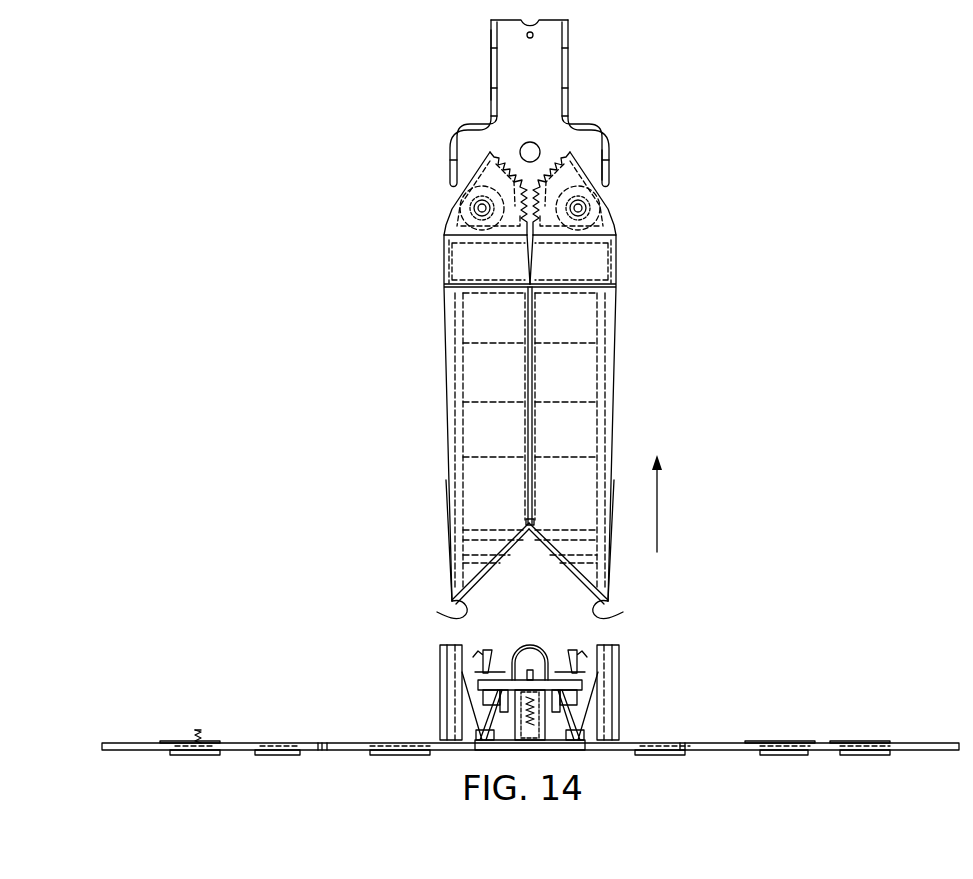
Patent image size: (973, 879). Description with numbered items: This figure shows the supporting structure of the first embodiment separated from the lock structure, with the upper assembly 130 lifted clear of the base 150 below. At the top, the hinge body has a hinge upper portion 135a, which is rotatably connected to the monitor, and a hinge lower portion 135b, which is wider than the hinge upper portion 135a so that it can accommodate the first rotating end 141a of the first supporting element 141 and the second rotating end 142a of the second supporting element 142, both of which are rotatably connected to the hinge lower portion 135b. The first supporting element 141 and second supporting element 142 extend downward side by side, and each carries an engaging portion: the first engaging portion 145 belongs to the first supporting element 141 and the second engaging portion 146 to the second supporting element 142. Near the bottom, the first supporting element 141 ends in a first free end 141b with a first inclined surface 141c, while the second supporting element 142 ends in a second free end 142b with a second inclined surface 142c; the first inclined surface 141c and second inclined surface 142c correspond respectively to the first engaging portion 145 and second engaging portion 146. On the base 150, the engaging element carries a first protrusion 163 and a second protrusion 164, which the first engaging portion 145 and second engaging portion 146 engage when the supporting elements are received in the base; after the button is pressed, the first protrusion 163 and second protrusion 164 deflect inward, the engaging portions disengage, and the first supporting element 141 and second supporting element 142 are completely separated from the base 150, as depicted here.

The connecting member 130 is at (575, 32).
The hinge upper portion 135a is at (513, 51).
The hinge lower portion 135b is at (610, 177).
The first supporting element 141 is at (616, 267).
The first rotating end 141a is at (592, 170).
The first free end 141b is at (608, 583).
The first inclined surface 141c is at (623, 612).
The second supporting element 142 is at (444, 268).
The second rotating end 142a is at (472, 170).
The second free end 142b is at (452, 583).
The second inclined surface 142c is at (437, 612).
The first engaging portion 145 is at (608, 565).
The second engaging portion 146 is at (452, 564).
The base 150 is at (858, 738).
The first protrusion 163 is at (582, 646).
The second protrusion 164 is at (478, 646).